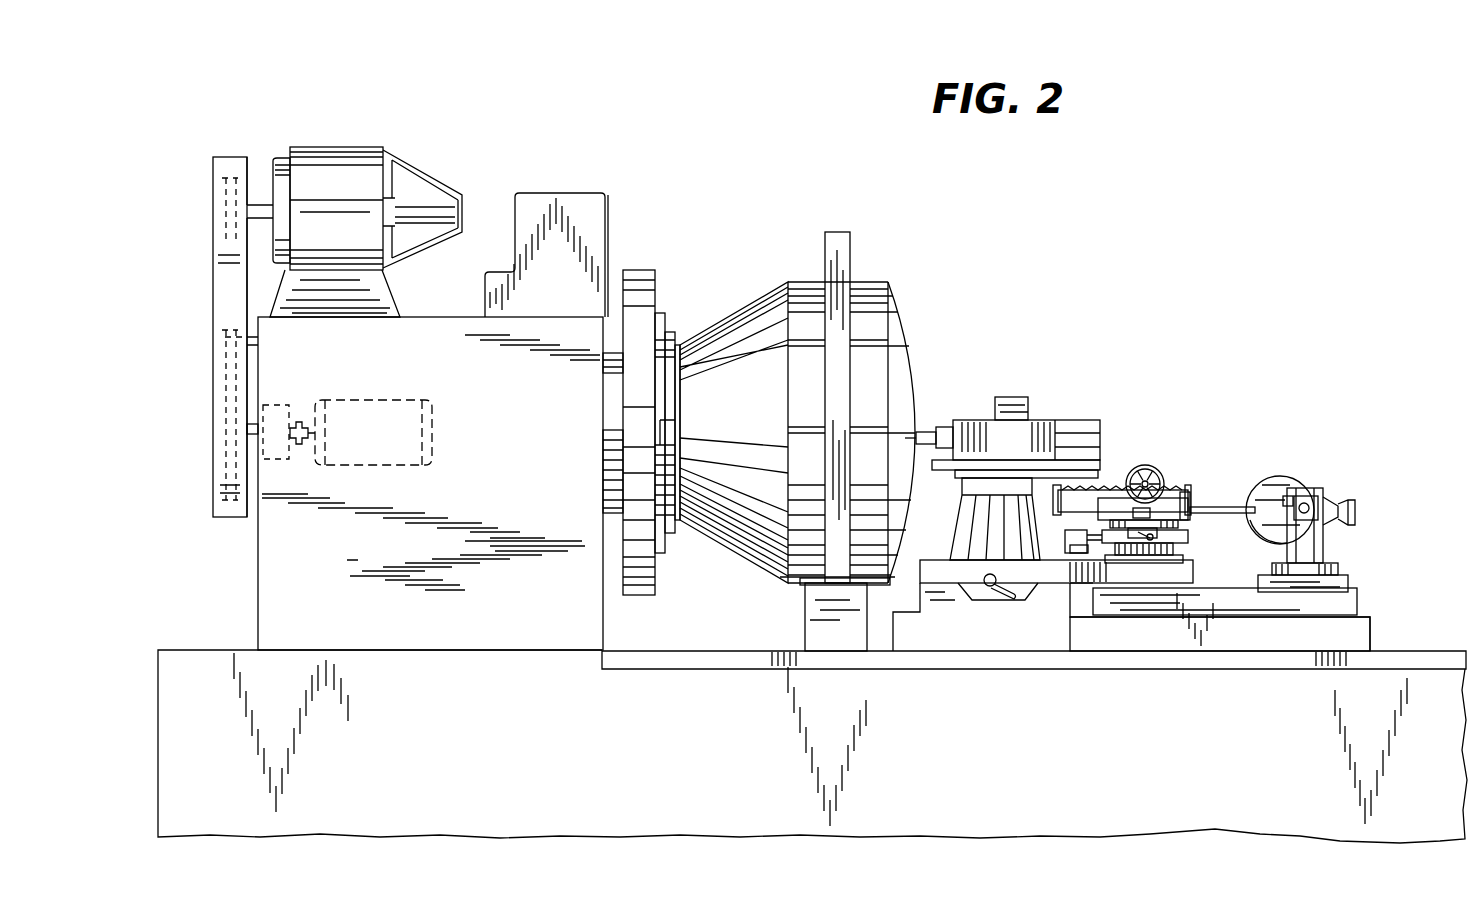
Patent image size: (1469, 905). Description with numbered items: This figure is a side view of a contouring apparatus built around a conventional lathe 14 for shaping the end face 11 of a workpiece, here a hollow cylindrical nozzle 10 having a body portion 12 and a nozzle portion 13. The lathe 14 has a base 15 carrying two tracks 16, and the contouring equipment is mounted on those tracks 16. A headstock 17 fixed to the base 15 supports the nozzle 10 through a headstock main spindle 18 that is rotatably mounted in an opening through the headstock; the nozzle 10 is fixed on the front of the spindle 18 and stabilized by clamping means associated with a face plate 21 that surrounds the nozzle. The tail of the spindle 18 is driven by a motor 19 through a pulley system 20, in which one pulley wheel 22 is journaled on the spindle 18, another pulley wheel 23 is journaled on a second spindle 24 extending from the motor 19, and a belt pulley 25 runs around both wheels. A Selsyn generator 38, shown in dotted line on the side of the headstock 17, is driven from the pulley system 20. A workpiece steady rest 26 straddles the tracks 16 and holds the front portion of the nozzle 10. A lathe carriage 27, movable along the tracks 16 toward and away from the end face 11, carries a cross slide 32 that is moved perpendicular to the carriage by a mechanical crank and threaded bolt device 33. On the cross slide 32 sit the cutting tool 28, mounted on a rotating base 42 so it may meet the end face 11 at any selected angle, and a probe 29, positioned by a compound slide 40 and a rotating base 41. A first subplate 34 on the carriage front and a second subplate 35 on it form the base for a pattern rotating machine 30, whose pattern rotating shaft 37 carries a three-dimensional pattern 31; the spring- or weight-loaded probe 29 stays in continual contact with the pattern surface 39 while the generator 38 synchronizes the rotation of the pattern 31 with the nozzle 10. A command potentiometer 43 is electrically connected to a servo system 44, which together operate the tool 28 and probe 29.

The nozzle 10 is at (820, 442).
The end face 11 is at (904, 318).
The body portion 12 is at (795, 585).
The nozzle portion 13 is at (740, 548).
The lathe 14 is at (809, 715).
The base 15 is at (712, 768).
The tracks 16 is at (1140, 662).
The headstock 17 is at (433, 421).
The headstock main spindle 18 is at (258, 440).
The motor 19 is at (350, 208).
The pulley system 20 is at (302, 314).
The face plate 21 is at (664, 270).
The pulley wheel 22 is at (222, 418).
The pulley wheel 23 is at (231, 185).
The second spindle 24 is at (262, 200).
The belt pulley 25 is at (222, 337).
The workpiece steady rest 26 is at (848, 243).
The lathe carriage 27 is at (1076, 643).
The cutting tool 28 is at (932, 430).
The probe 29 is at (1226, 505).
The pattern rotating machine 30 is at (1325, 527).
The three-dimensional pattern 31 is at (1272, 490).
The cross slide 32 is at (937, 565).
The mechanical crank and threaded bolt device 33 is at (990, 590).
The first subplate 34 is at (1275, 605).
The second subplate 35 is at (1345, 578).
The pattern rotating shaft 37 is at (1322, 476).
The Selsyn generator 38 is at (402, 410).
The pattern surface 39 is at (1266, 537).
The compound slide 40 is at (1150, 535).
The rotating base 41 is at (1088, 540).
The rotating base 42 is at (985, 490).
The command potentiometer 43 is at (1113, 508).
The servo system 44 is at (1043, 430).